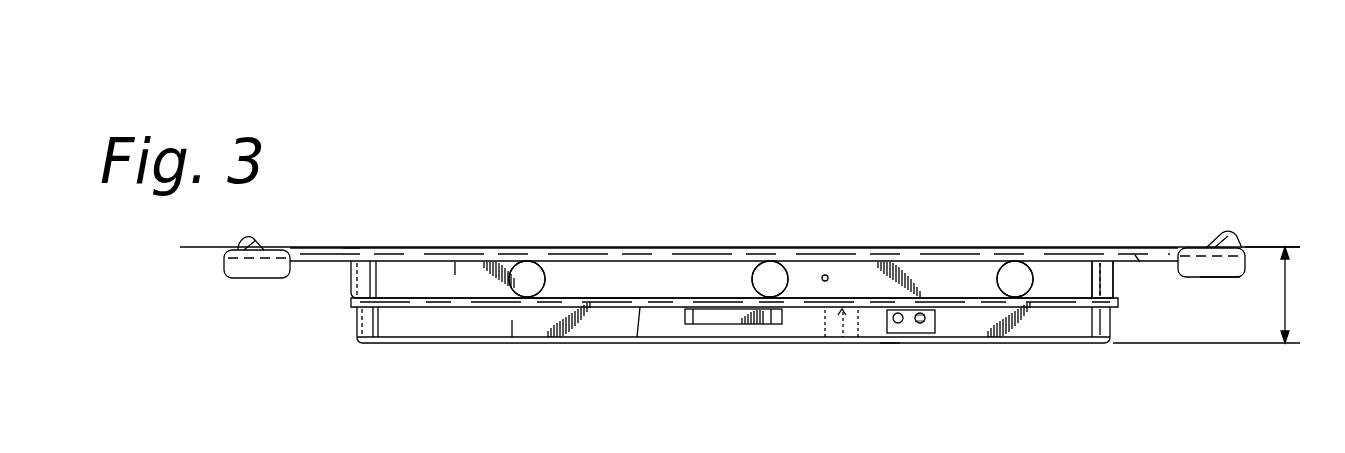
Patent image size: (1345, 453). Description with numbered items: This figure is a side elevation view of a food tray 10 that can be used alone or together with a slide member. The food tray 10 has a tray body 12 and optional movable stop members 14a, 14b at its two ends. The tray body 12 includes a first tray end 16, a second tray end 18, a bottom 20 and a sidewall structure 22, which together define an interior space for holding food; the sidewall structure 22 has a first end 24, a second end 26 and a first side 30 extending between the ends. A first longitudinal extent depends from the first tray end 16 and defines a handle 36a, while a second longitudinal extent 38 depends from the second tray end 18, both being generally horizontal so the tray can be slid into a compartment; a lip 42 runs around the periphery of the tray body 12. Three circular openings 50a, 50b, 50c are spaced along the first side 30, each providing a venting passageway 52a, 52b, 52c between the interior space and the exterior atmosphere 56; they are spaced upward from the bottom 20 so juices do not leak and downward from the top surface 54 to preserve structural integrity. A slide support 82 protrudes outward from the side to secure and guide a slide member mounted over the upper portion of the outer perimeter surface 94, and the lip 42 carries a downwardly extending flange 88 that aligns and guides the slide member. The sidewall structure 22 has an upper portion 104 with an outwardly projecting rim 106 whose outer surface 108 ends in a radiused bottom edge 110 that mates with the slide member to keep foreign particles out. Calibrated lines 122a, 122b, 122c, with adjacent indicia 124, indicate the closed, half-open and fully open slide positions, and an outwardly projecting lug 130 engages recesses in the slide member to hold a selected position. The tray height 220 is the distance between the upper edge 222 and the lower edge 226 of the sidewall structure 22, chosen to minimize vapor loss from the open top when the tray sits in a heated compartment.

The food tray 10 is at (1167, 192).
The tray body 12 is at (998, 345).
The movable stop member 14a is at (250, 240).
The movable stop member 14b is at (1222, 233).
The first tray end 16 is at (188, 248).
The second tray end 18 is at (1227, 278).
The bottom 20 is at (427, 345).
The sidewall structure 22 is at (512, 322).
The first end of sidewall structure 24 is at (350, 335).
The second end of sidewall structure 26 is at (1113, 307).
The first side of sidewall structure 30 is at (388, 330).
The handle 36a is at (292, 248).
The second longitudinal extent 38 is at (1118, 283).
The lip 42 is at (343, 249).
The opening 50a is at (530, 296).
The opening 50b is at (775, 296).
The opening 50c is at (1003, 265).
The venting passageway 52a is at (527, 263).
The venting passageway 52b is at (772, 263).
The venting passageway 52c is at (1020, 265).
The top surface 54 is at (1140, 247).
The exterior atmosphere 56 is at (760, 208).
The slide support 82 is at (710, 320).
The downwardly extending flange 88 is at (345, 262).
The outer perimeter surface 94 is at (1140, 262).
The upper portion of sidewall structure 104 is at (455, 270).
The outwardly projecting rim 106 is at (490, 263).
The outer surface 108 is at (617, 293).
The radiused bottom edge 110 is at (640, 307).
The calibrated line 122a is at (823, 312).
The calibrated line 122b is at (840, 312).
The calibrated line 122c is at (858, 312).
The indicia 124 is at (881, 345).
The lug 130 is at (828, 273).
The height 220 is at (1209, 295).
The upper edge 222 is at (1244, 246).
The lower edge 226 is at (1098, 347).